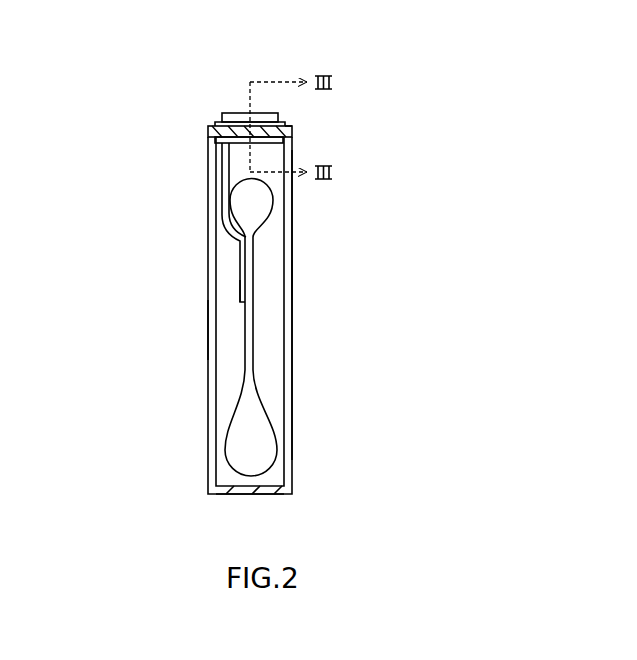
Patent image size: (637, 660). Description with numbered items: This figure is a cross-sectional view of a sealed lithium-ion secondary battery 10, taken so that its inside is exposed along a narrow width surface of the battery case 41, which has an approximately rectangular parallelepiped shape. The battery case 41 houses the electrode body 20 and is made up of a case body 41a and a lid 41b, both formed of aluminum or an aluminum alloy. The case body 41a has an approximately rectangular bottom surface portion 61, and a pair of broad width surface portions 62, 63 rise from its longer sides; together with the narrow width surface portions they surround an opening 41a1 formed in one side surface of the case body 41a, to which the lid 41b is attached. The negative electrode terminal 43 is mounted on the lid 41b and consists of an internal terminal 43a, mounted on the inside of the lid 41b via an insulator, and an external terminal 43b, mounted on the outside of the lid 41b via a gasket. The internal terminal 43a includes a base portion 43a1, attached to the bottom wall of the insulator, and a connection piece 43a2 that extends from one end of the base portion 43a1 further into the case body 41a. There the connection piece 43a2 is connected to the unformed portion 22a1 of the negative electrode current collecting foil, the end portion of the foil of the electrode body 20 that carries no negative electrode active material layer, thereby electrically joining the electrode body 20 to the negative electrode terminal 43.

The lithium-ion secondary battery 10 is at (358, 82).
The electrode body 20 is at (212, 407).
The unformed portion 22a1 is at (256, 328).
The battery case 41 is at (190, 147).
The case body 41a is at (292, 203).
The opening 41a1 is at (208, 120).
The lid 41b is at (289, 127).
The negative electrode terminal 43 is at (235, 96).
The internal terminal 43a is at (233, 250).
The base portion 43a1 is at (280, 152).
The connection piece 43a2 is at (243, 283).
The external terminal 43b is at (213, 118).
The bottom surface portion 61 is at (250, 496).
The broad width surface portion 62 is at (208, 328).
The broad width surface portion 63 is at (292, 278).